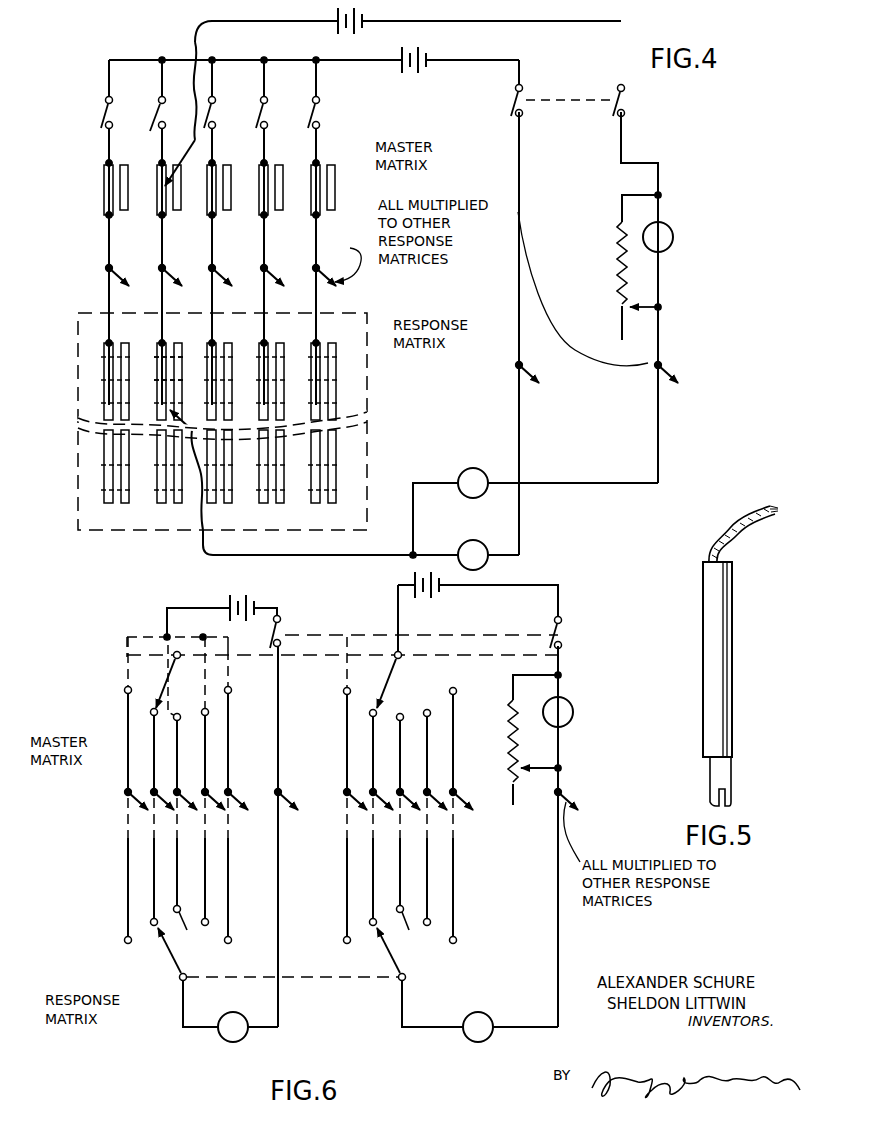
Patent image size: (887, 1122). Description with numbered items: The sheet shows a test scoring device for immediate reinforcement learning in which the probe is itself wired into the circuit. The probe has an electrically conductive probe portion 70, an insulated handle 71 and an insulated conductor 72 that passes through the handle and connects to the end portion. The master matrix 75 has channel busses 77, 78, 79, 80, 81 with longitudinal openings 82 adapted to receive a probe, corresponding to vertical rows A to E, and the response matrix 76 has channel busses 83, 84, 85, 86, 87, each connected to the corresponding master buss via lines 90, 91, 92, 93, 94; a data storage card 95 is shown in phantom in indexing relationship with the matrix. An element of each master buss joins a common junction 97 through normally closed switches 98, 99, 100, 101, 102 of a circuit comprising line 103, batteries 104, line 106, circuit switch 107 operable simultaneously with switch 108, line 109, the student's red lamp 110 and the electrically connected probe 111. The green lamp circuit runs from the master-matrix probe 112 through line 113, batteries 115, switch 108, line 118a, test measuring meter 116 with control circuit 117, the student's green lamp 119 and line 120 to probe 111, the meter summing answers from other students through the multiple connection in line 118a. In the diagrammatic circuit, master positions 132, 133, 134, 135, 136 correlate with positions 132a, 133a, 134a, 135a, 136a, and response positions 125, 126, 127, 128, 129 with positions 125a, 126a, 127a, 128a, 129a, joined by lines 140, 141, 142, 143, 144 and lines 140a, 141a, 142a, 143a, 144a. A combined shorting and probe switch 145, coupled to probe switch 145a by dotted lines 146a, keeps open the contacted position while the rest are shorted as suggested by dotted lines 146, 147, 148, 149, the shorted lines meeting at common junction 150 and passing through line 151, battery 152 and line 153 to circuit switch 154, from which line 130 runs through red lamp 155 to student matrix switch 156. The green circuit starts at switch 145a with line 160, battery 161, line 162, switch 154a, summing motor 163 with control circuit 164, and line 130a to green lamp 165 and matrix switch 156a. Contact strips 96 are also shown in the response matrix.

In FIG. 5, the probe portion 70 is at (722, 774).
In FIG. 5, the insulated handle 71 is at (716, 676).
In FIG. 5, the insulated conductor 72 is at (732, 528).
In FIG. 4, the master matrix 75 is at (95, 147).
In FIG. 4, the response matrix 76 is at (88, 312).
In FIG. 4, the channel buss 77 is at (118, 210).
In FIG. 4, the channel buss 78 is at (171, 210).
In FIG. 4, the channel buss 79 is at (221, 210).
In FIG. 4, the channel buss 80 is at (273, 210).
In FIG. 4, the channel buss 81 is at (325, 210).
In FIG. 4, the longitudinal openings 82 is at (113, 187).
In FIG. 4, the channel buss 83 is at (116, 503).
In FIG. 4, the channel buss 84 is at (169, 503).
In FIG. 4, the channel buss 85 is at (219, 503).
In FIG. 4, the channel buss 86 is at (271, 503).
In FIG. 4, the channel buss 87 is at (323, 503).
In FIG. 4, the line 90 is at (111, 245).
In FIG. 4, the line 91 is at (164, 245).
In FIG. 4, the line 92 is at (214, 245).
In FIG. 4, the line 93 is at (266, 245).
In FIG. 4, the line 94 is at (318, 245).
In FIG. 4, the data storage card 95 is at (80, 456).
In FIG. 4, the contact strips 96 is at (160, 359).
In FIG. 4, the common junction 97 is at (314, 56).
In FIG. 4, the normally closed switch 98 is at (103, 106).
In FIG. 4, the normally closed switch 99 is at (156, 106).
In FIG. 4, the normally closed switch 100 is at (216, 110).
In FIG. 4, the normally closed switch 101 is at (268, 110).
In FIG. 4, the normally closed switch 102 is at (320, 110).
In FIG. 4, the line 103 is at (343, 60).
In FIG. 4, the batteries 104 is at (420, 54).
In FIG. 4, the line 106 is at (521, 73).
In FIG. 4, the circuit switch 107 is at (508, 112).
In FIG. 4, the switch 108 is at (625, 101).
In FIG. 4, the line 109 is at (470, 333).
In FIG. 4, the student's red lamp 110 is at (474, 540).
In FIG. 4, the probe 111 is at (188, 425).
In FIG. 4, the probe 112 is at (193, 45).
In FIG. 4, the line 113 is at (226, 21).
In FIG. 4, the batteries 115 is at (362, 20).
In FIG. 4, the test measuring meter 116 is at (670, 228).
In FIG. 4, the control circuit 117 is at (624, 272).
In FIG. 4, the line 118a is at (660, 188).
In FIG. 4, the student's green lamp 119 is at (476, 468).
In FIG. 4, the line 120 is at (426, 483).
In FIG. 6, the position 125 is at (124, 941).
In FIG. 6, the position 126 is at (150, 922).
In FIG. 6, the position 127 is at (191, 928).
In FIG. 6, the position 128 is at (209, 921).
In FIG. 6, the position 129 is at (232, 941).
In FIG. 6, the line 130 is at (280, 766).
In FIG. 6, the position 132 is at (124, 691).
In FIG. 6, the position 133 is at (150, 712).
In FIG. 6, the position 134 is at (181, 717).
In FIG. 6, the position 135 is at (209, 711).
In FIG. 6, the position 136 is at (230, 688).
In FIG. 6, the line 140 is at (128, 844).
In FIG. 6, the line 141 is at (154, 860).
In FIG. 6, the line 142 is at (177, 882).
In FIG. 6, the line 143 is at (207, 852).
In FIG. 6, the line 144 is at (230, 862).
In FIG. 6, the combined shorting and probe switch 145 is at (160, 698).
In FIG. 6, the dotted line 146 is at (127, 641).
In FIG. 6, the dotted line 147 is at (166, 652).
In FIG. 6, the dotted line 148 is at (203, 635).
In FIG. 6, the dotted line 149 is at (230, 645).
In FIG. 6, the common junction 150 is at (165, 635).
In FIG. 6, the line 151 is at (166, 613).
In FIG. 6, the battery 152 is at (250, 601).
In FIG. 6, the line 153 is at (280, 614).
In FIG. 6, the circuit switch 154 is at (281, 636).
In FIG. 6, the red lamp 155 is at (218, 1035).
In FIG. 6, the student matrix switch 156 is at (170, 963).
In FIG. 6, the line 160 is at (400, 626).
In FIG. 6, the battery 161 is at (438, 590).
In FIG. 6, the line 162 is at (560, 600).
In FIG. 6, the summing motor 163 is at (570, 703).
In FIG. 6, the control circuit 164 is at (540, 750).
In FIG. 6, the green lamp 165 is at (463, 1035).
In FIG. 6, the position 125a is at (343, 941).
In FIG. 6, the position 126a is at (369, 922).
In FIG. 6, the position 127a is at (415, 928).
In FIG. 6, the position 128a is at (431, 921).
In FIG. 6, the position 129a is at (457, 941).
In FIG. 6, the line 130a is at (560, 964).
In FIG. 6, the position 132a is at (344, 688).
In FIG. 6, the position 133a is at (369, 713).
In FIG. 6, the position 134a is at (410, 702).
In FIG. 6, the position 135a is at (431, 714).
In FIG. 6, the position 136a is at (456, 689).
In FIG. 6, the line 140a is at (347, 844).
In FIG. 6, the line 141a is at (373, 860).
In FIG. 6, the line 142a is at (400, 882).
In FIG. 6, the line 143a is at (429, 852).
In FIG. 6, the line 144a is at (455, 862).
In FIG. 6, the probe switch 145a is at (400, 674).
In FIG. 6, the dotted lines 146a is at (310, 655).
In FIG. 6, the switch 154a is at (562, 636).
In FIG. 6, the matrix switch 156a is at (398, 963).